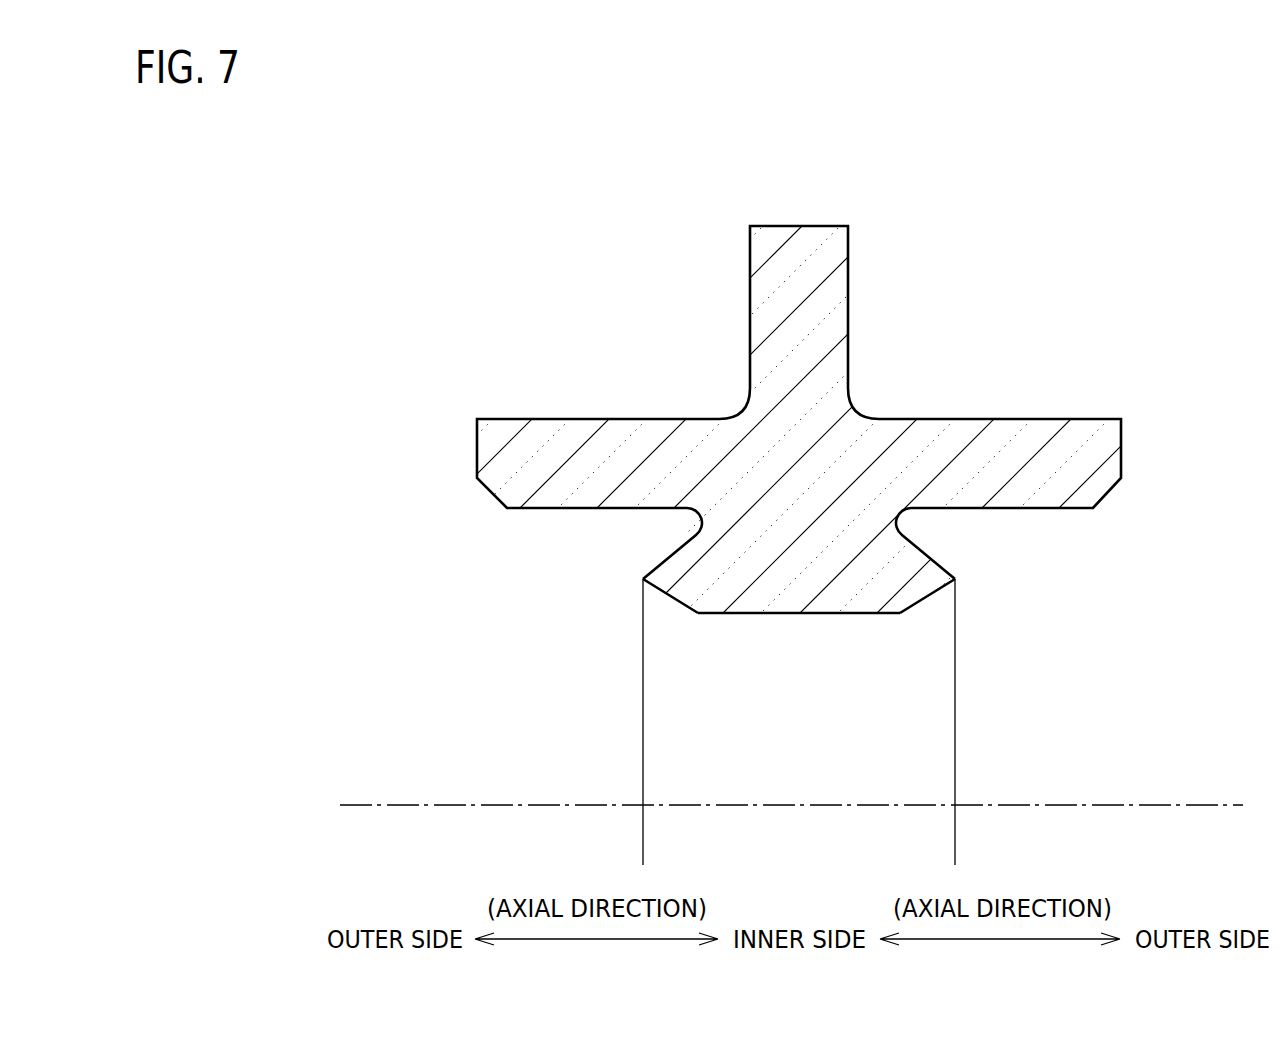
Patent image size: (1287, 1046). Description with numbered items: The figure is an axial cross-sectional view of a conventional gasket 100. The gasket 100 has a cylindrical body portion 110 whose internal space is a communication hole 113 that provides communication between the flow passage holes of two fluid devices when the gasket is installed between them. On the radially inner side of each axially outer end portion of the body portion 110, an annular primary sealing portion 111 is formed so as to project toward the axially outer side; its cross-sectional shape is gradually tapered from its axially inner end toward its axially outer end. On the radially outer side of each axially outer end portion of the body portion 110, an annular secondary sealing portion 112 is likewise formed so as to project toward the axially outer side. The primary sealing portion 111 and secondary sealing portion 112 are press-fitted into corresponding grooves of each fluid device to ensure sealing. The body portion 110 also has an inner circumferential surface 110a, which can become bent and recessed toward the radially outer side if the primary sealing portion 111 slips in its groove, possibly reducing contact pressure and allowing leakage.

The gasket 100 is at (793, 202).
The body portion 110 is at (762, 592).
The inner circumferential surface 110a is at (840, 615).
The primary sealing portion 111 is at (667, 580).
The secondary sealing portion 112 is at (550, 453).
The communication hole 113 is at (822, 781).